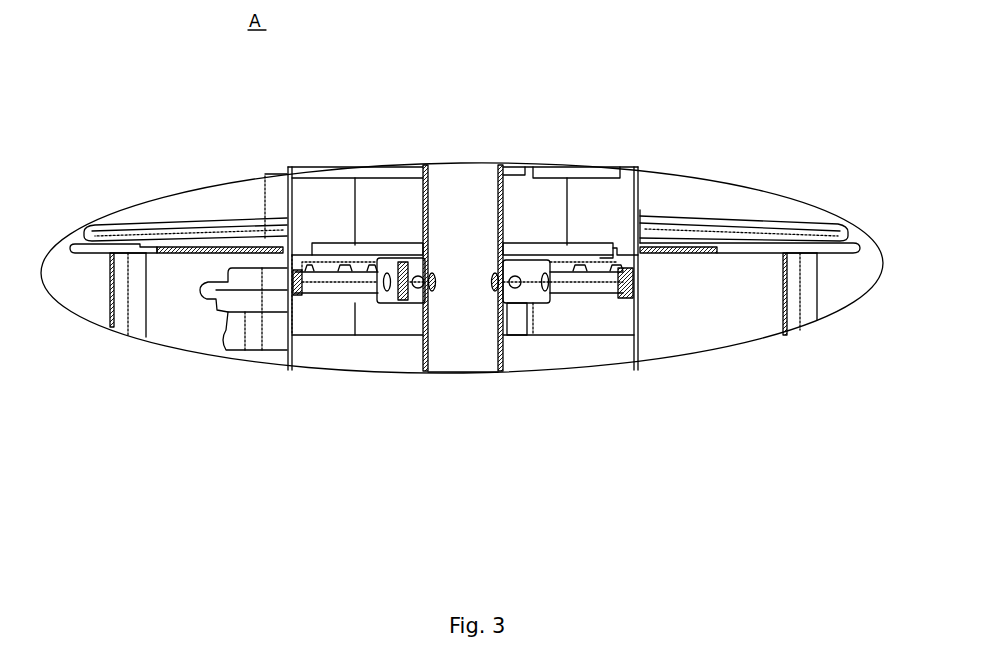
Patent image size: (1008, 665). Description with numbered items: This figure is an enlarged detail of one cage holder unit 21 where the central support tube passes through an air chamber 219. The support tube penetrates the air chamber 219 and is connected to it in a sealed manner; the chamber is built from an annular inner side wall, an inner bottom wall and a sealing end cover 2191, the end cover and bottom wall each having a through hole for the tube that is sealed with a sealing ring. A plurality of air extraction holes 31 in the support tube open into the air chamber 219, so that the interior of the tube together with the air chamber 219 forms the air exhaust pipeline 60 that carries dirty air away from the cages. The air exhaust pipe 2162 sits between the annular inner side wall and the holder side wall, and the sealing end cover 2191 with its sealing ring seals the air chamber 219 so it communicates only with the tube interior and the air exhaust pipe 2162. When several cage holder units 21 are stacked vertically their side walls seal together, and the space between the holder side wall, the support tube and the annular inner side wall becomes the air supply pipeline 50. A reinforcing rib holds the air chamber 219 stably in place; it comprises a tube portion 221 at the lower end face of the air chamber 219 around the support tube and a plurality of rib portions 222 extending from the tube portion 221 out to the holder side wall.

The cage holder unit 21 is at (795, 235).
The air extraction hole 31 is at (433, 273).
The air supply pipeline 50 is at (580, 210).
The air exhaust pipeline 60 is at (463, 340).
The air chamber 219 is at (530, 280).
The tube portion 221 is at (508, 318).
The rib portion 222 is at (373, 317).
The air exhaust pipe 2162 is at (332, 280).
The sealing end cover 2191 is at (545, 265).